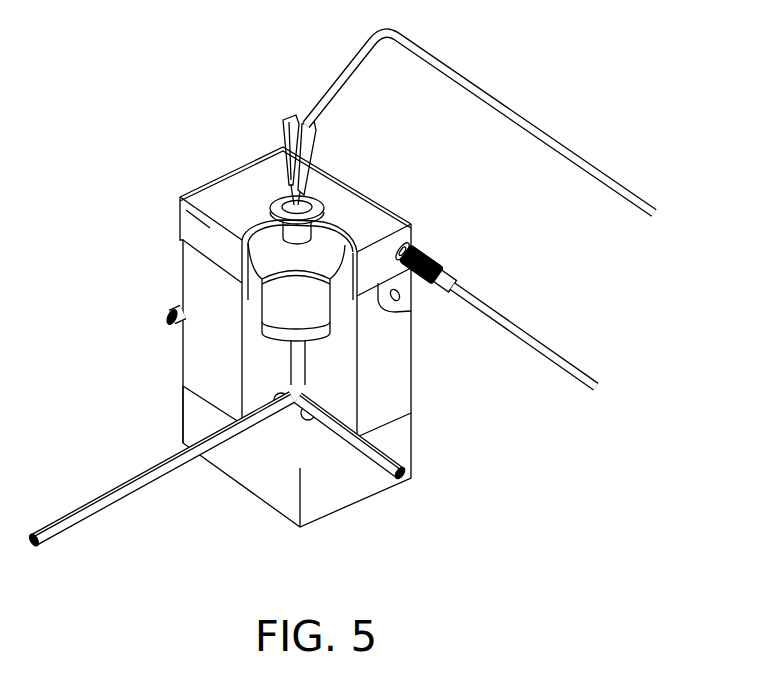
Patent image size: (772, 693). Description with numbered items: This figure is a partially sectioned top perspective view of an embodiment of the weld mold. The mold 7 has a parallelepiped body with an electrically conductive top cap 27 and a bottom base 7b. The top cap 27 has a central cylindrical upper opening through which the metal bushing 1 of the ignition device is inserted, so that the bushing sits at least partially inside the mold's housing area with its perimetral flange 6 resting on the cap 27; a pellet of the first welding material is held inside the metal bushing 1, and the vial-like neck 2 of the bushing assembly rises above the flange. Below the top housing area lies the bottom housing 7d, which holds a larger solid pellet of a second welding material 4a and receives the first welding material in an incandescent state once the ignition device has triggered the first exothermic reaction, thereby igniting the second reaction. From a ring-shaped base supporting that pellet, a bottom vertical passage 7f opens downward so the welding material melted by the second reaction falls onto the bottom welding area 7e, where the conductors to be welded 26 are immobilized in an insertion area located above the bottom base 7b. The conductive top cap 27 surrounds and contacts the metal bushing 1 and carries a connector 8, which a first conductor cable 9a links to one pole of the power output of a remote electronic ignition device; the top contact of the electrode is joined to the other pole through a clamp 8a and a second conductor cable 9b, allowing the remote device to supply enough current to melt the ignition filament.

The metal bushing 1 is at (313, 262).
The vial neck 2 is at (301, 233).
The second welding material 4a is at (323, 330).
The perimetral flange 6 is at (276, 200).
The mold 7 is at (160, 233).
The bottom base 7b is at (190, 425).
The bottom housing 7d is at (255, 295).
The bottom welding area 7e is at (310, 425).
The bottom vertical passage 7f is at (287, 400).
The connector 8 is at (428, 263).
The clamp 8a is at (293, 128).
The first conductor cable 9a is at (527, 340).
The second conductor cable 9b is at (532, 128).
The conductors to be welded 26 is at (174, 318).
The top cap 27 is at (205, 233).